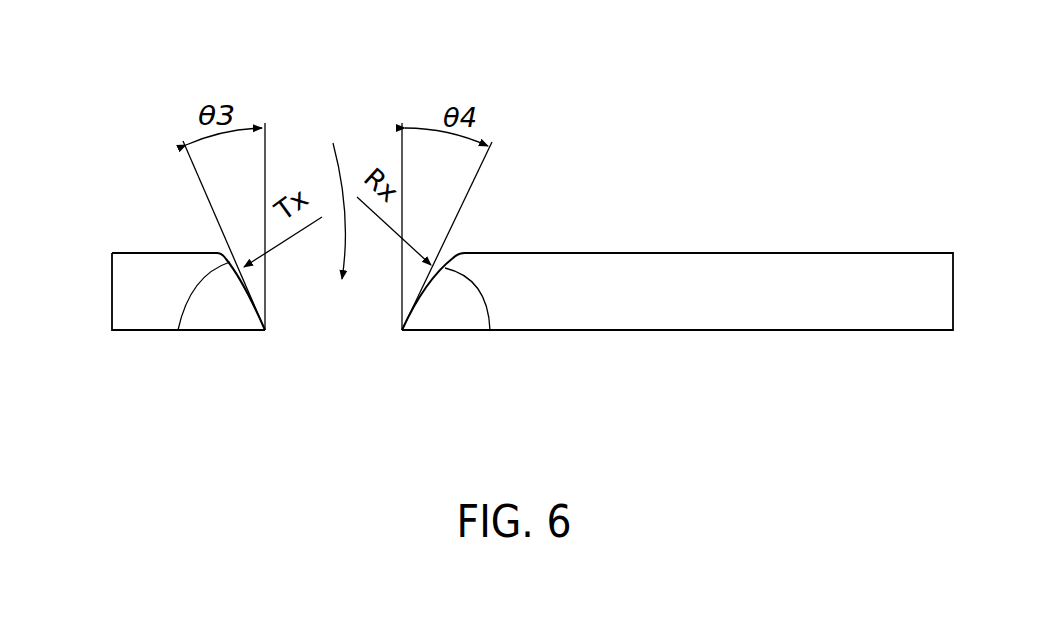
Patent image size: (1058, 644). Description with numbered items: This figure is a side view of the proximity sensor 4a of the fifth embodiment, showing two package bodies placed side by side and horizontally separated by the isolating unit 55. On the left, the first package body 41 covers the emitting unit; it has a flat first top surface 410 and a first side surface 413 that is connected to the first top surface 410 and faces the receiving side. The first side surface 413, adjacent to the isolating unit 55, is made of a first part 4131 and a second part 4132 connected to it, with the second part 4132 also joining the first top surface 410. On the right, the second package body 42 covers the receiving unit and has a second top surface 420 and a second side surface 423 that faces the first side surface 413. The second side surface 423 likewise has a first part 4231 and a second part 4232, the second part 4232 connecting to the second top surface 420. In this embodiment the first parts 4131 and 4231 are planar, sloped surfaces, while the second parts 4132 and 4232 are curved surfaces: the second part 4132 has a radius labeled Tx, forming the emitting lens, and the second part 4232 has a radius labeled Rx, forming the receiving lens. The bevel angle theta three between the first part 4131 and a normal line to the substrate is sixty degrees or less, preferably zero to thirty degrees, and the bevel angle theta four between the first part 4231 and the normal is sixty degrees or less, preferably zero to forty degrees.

The optical sensing assembly 4a is at (779, 91).
The first package body 41 is at (107, 249).
The first top surface 410 is at (150, 253).
The first side surface 413 is at (292, 435).
The first part 4131 is at (262, 322).
The second part 4132 is at (178, 330).
The second package body 42 is at (918, 246).
The second top surface 420 is at (847, 253).
The second side surface 423 is at (533, 435).
The first part 4231 is at (405, 322).
The second part 4232 is at (490, 330).
The isolating unit 55 is at (334, 195).